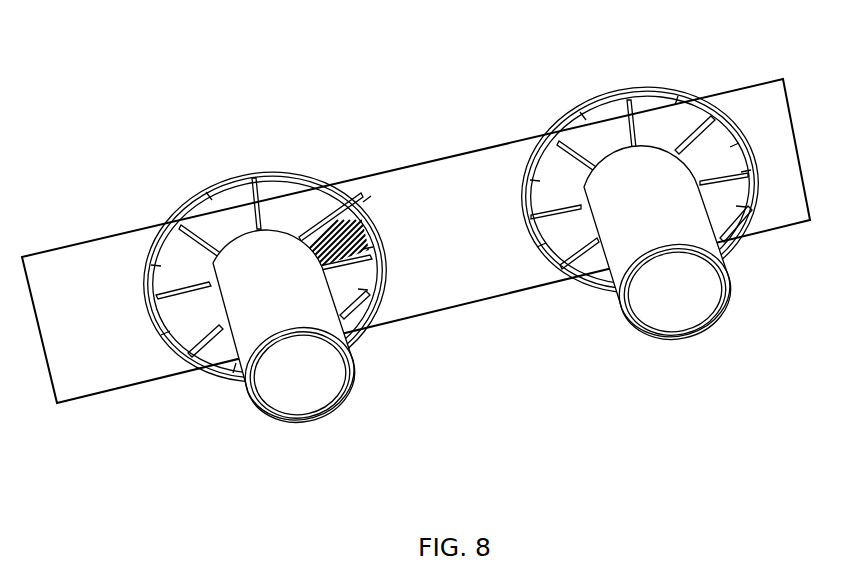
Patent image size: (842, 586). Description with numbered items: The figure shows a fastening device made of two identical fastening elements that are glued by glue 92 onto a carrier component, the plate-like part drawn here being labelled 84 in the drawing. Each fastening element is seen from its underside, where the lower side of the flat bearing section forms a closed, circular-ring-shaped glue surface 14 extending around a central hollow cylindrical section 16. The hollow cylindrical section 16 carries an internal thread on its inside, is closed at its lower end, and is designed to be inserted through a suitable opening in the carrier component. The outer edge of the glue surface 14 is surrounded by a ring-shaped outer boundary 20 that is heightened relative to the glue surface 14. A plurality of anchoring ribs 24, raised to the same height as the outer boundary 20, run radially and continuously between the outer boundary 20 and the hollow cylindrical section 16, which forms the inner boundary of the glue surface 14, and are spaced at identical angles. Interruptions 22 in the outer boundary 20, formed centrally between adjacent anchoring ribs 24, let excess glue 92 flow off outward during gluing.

The glue surface 14 is at (307, 210).
The hollow cylindrical section 16 is at (323, 299).
The outer boundary 20 is at (246, 186).
The interruptions 22 is at (211, 194).
The anchoring ribs 24 is at (261, 205).
The rail plate 84 is at (400, 168).
The glue 92 is at (348, 232).